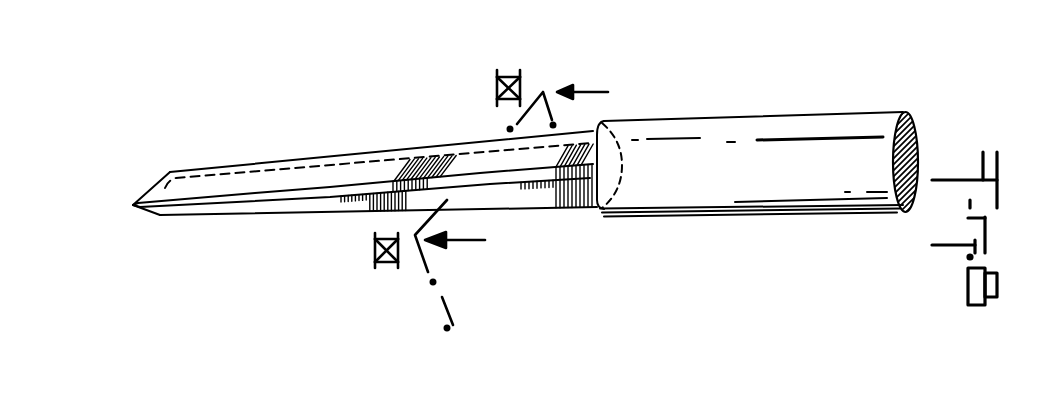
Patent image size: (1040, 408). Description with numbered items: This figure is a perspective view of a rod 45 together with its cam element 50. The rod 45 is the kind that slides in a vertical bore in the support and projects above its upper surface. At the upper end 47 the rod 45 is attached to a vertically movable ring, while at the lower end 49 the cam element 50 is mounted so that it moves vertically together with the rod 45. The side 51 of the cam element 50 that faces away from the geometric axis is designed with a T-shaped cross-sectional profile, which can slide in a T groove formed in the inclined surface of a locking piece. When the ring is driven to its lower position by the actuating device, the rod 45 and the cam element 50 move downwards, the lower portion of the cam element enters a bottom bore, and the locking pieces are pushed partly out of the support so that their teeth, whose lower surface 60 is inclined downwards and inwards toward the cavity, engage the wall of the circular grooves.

The rod 45 is at (758, 128).
The upper end 47 is at (903, 118).
The lower end 49 is at (598, 196).
The cam element 50 is at (355, 172).
The side 51 is at (356, 172).
The lower surface 60 is at (208, 216).